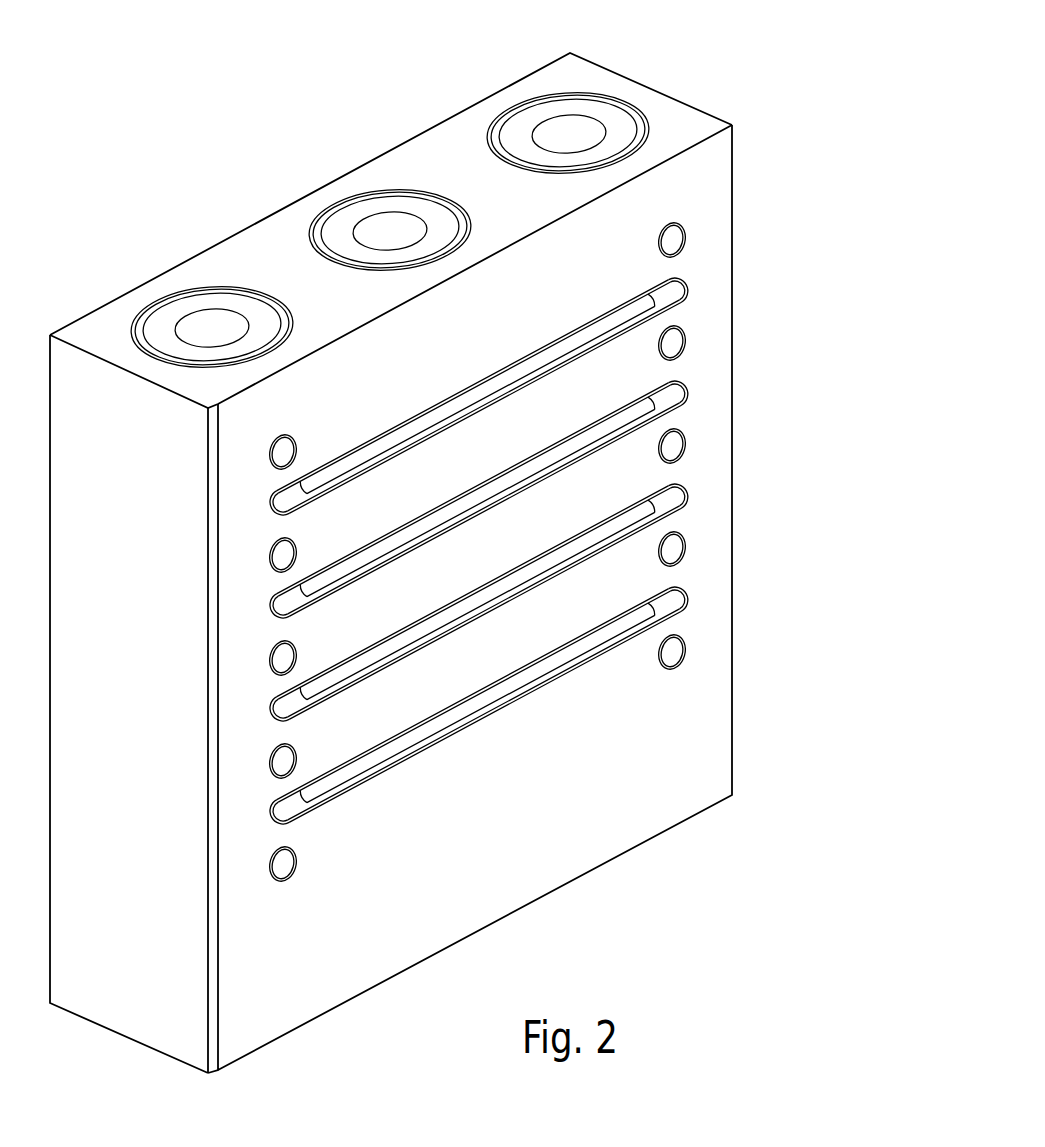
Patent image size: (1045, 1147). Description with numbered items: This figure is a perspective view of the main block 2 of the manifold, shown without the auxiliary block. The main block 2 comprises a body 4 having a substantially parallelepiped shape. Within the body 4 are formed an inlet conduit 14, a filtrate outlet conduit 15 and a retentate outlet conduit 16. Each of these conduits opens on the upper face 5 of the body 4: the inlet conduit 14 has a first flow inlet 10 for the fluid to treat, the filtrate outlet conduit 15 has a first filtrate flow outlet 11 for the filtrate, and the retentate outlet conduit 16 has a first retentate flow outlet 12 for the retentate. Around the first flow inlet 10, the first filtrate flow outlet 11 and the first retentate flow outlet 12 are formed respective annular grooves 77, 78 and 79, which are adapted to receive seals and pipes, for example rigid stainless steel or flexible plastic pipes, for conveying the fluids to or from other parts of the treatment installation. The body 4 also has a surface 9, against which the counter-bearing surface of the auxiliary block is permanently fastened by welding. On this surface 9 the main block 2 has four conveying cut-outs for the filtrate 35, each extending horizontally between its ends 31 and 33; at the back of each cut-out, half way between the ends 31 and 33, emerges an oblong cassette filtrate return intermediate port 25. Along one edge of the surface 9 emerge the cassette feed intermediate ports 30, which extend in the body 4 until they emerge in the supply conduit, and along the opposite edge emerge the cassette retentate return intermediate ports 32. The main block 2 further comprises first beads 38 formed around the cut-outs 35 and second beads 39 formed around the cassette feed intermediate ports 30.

The main block 2 is at (423, 537).
The body 4 is at (290, 218).
The upper face 5 is at (126, 657).
The surface 9 is at (470, 599).
The first flow inlet 10 is at (225, 318).
The first filtrate flow outlet 11 is at (403, 220).
The first retentate flow outlet 12 is at (585, 128).
The inlet conduit 14 is at (208, 292).
The filtrate outlet conduit 15 is at (387, 195).
The retentate outlet conduit 16 is at (566, 100).
The annular groove 77 is at (283, 308).
The annular groove 78 is at (460, 214).
The annular groove 79 is at (643, 130).
The cassette filtrate return intermediate port 25 is at (484, 561).
The cassette feed intermediate port 30 is at (283, 452).
The end of cut-out 31 is at (290, 516).
The cassette retentate return intermediate port 32 is at (673, 240).
The end of cut-out 33 is at (726, 446).
The conveying cut-out for the filtrate 35 is at (377, 440).
The first bead 38 is at (590, 318).
The second bead 39 is at (277, 452).